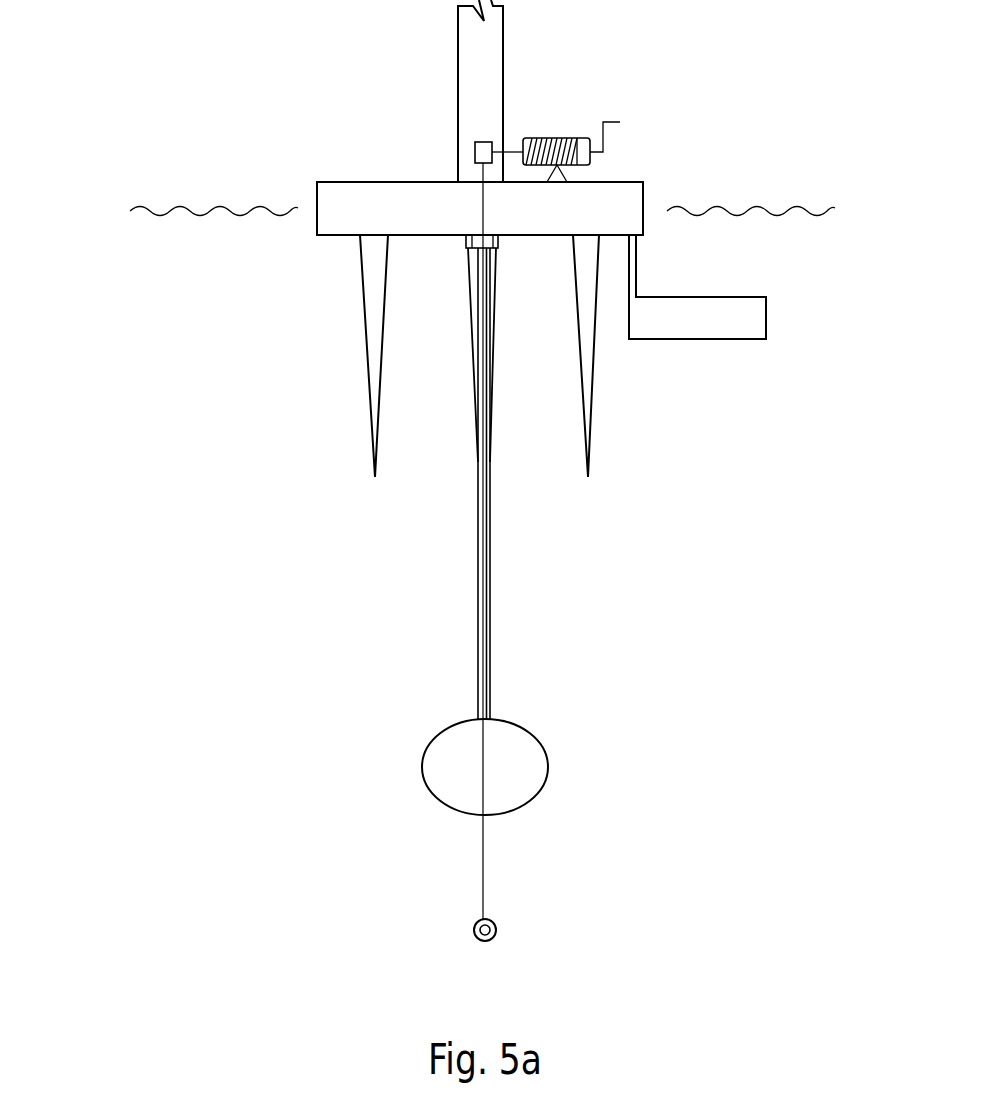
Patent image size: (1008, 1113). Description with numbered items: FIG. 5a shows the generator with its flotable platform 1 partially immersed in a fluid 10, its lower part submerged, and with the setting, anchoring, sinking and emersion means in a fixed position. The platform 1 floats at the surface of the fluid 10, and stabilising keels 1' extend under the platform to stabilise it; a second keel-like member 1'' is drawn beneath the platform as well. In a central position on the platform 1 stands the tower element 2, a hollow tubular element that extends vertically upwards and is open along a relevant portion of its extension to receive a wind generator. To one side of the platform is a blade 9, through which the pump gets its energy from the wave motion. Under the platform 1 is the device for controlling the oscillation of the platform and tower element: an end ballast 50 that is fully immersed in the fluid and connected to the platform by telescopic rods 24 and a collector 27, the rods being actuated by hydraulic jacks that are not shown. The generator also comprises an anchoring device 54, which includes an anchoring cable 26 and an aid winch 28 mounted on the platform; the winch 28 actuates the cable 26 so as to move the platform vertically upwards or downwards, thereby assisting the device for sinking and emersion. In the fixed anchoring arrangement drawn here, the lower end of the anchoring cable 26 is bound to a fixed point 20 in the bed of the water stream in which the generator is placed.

The flotable platform 1 is at (463, 175).
The tower element 2 is at (504, 58).
The aid winch 28 is at (545, 133).
The fluid 10 is at (136, 206).
The stabilising keel 1' is at (326, 356).
The second leg 1'' is at (521, 355).
The collector 27 is at (465, 250).
The telescopic rods 24 is at (475, 273).
The anchoring cable 26 is at (485, 348).
The blade 9 is at (707, 341).
The end ballast 50 is at (593, 417).
The anchoring device 54 is at (538, 645).
The fixed point 20 is at (497, 943).